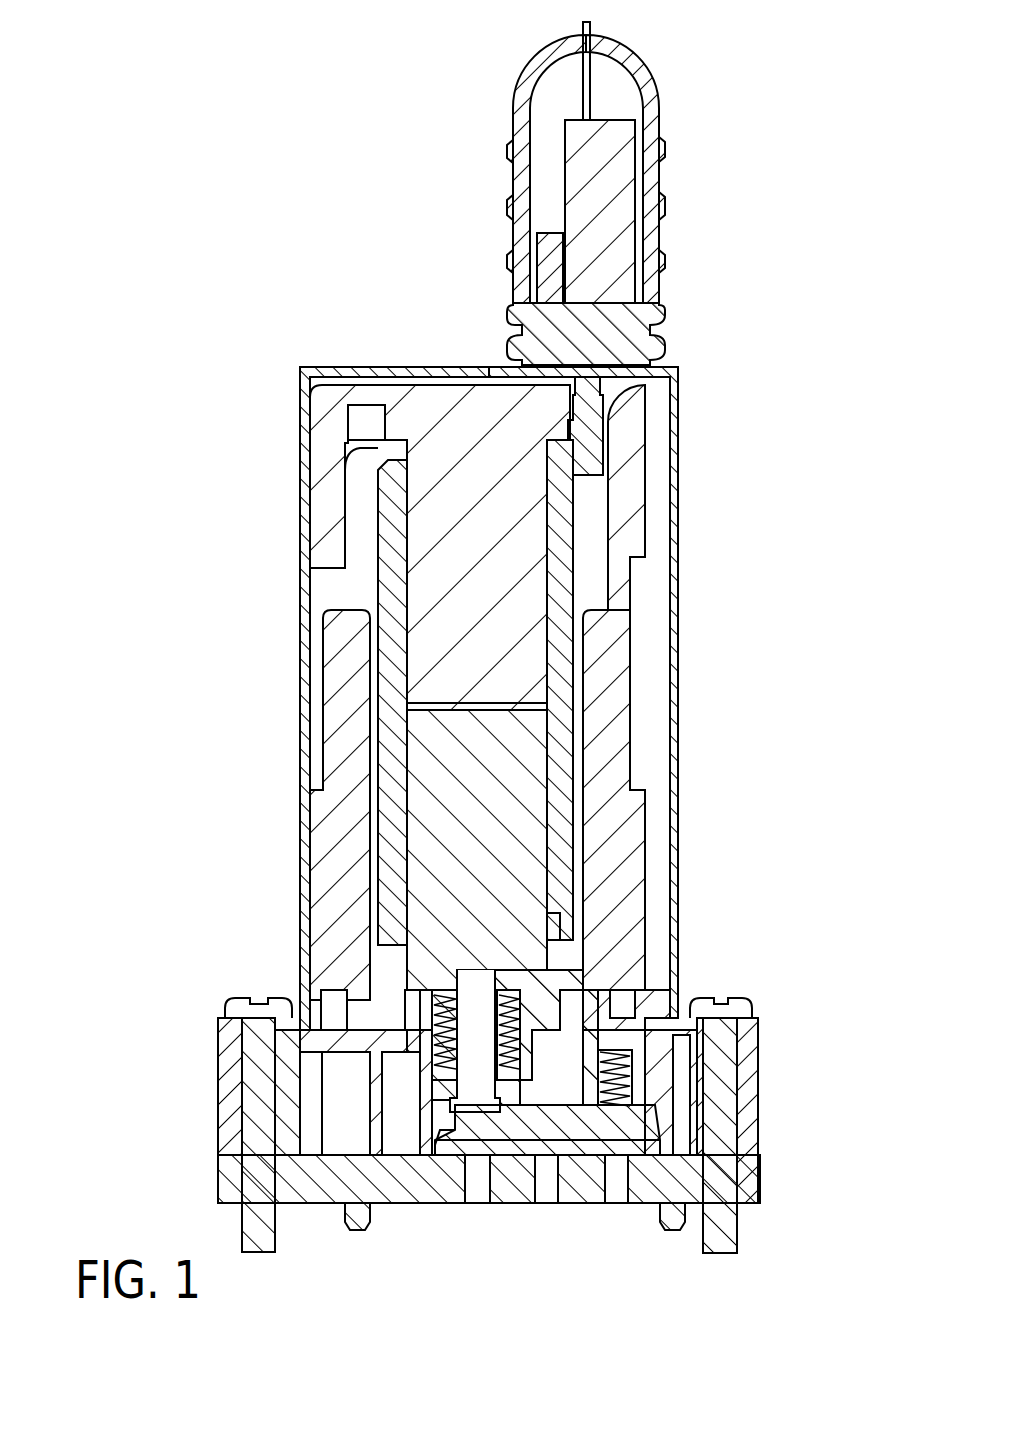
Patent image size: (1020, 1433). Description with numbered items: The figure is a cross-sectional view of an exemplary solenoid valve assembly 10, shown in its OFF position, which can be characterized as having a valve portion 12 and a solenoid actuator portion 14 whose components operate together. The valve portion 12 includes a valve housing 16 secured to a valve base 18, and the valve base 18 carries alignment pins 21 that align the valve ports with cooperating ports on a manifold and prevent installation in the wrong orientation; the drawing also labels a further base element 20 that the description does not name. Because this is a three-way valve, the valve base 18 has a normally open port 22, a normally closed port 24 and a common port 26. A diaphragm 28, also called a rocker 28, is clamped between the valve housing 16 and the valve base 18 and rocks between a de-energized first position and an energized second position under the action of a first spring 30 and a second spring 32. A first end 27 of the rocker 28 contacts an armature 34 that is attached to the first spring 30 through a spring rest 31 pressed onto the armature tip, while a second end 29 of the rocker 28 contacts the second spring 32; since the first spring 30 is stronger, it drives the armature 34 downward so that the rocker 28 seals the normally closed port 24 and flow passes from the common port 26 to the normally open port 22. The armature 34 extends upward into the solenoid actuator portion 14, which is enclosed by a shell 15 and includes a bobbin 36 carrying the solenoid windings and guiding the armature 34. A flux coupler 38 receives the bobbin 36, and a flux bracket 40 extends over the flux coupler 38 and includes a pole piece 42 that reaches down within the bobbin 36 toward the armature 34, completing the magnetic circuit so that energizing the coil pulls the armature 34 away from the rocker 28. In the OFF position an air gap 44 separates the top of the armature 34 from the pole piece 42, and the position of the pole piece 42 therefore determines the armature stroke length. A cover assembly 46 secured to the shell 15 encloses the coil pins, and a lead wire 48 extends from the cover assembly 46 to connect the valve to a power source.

The solenoid valve assembly 10 is at (318, 152).
The valve portion 12 is at (188, 1140).
The solenoid actuator portion 14 is at (258, 530).
The shell 15 is at (300, 385).
The valve housing 16 is at (224, 1020).
The valve base 18 is at (760, 1180).
The right mounting flange 20 is at (742, 1000).
The alignment pins 21 is at (360, 1228).
The normally open port 22 is at (618, 1205).
The normally closed port 24 is at (480, 1205).
The common port 26 is at (550, 1205).
The first end 27 is at (432, 1150).
The diaphragm 28 is at (527, 1152).
The second end 29 is at (660, 1160).
The first spring 30 is at (440, 1000).
The spring rest 31 is at (418, 1078).
The second spring 32 is at (618, 1002).
The armature 34 is at (570, 935).
The bobbin 36 is at (567, 636).
The flux coupler 38 is at (325, 826).
The flux bracket 40 is at (328, 412).
The pole piece 42 is at (535, 590).
The air gap 44 is at (410, 706).
The cover assembly 46 is at (684, 188).
The lead wire 48 is at (582, 34).